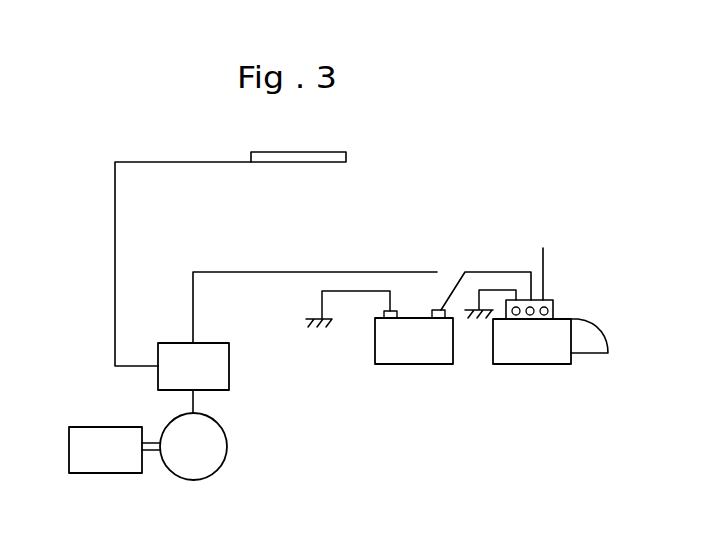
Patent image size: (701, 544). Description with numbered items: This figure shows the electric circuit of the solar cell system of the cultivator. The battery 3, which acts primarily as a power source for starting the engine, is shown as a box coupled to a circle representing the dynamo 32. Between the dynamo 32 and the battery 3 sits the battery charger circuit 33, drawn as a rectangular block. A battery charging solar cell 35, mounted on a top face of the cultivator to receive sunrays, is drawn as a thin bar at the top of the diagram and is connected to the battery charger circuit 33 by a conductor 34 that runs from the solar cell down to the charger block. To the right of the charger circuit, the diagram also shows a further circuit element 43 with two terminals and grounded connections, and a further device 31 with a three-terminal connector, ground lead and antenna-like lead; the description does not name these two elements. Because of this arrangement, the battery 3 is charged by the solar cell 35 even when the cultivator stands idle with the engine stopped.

The battery 3 is at (111, 474).
The radio receiver 31 is at (540, 365).
The dynamo 32 is at (222, 451).
The battery charger circuit 33 is at (193, 366).
The wire / cable 34 is at (115, 228).
The solar cell 35 is at (305, 163).
The battery 43 is at (415, 365).